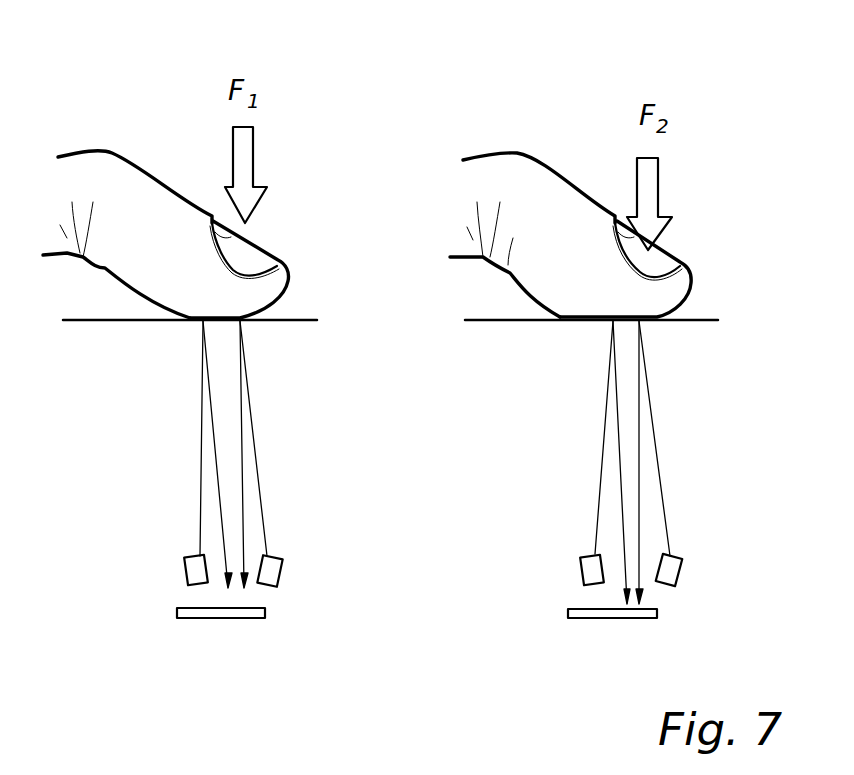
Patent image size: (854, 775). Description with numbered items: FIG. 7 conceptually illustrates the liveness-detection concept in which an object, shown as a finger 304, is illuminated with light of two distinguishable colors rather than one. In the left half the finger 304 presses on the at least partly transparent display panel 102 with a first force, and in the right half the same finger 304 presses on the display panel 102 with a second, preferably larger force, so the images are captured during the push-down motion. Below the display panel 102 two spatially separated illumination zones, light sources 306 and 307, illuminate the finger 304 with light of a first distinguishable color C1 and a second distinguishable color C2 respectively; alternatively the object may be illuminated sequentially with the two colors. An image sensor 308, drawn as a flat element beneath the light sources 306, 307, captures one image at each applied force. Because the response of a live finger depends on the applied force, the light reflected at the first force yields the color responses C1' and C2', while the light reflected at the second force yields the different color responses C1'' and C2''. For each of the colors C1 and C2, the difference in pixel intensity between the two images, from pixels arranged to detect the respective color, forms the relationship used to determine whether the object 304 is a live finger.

The finger 304 is at (83, 167).
The at least partly transparent display panel 102 is at (485, 335).
The light source 306 is at (183, 563).
The light source 307 is at (283, 568).
The image sensor 308 is at (195, 618).
The light of distinguishable color C1 is at (372, 462).
The light of distinguishable color C2 is at (486, 462).
The color response C1' is at (142, 438).
The color response C2' is at (292, 438).
The color response C1'' is at (544, 437).
The color response C2'' is at (691, 438).